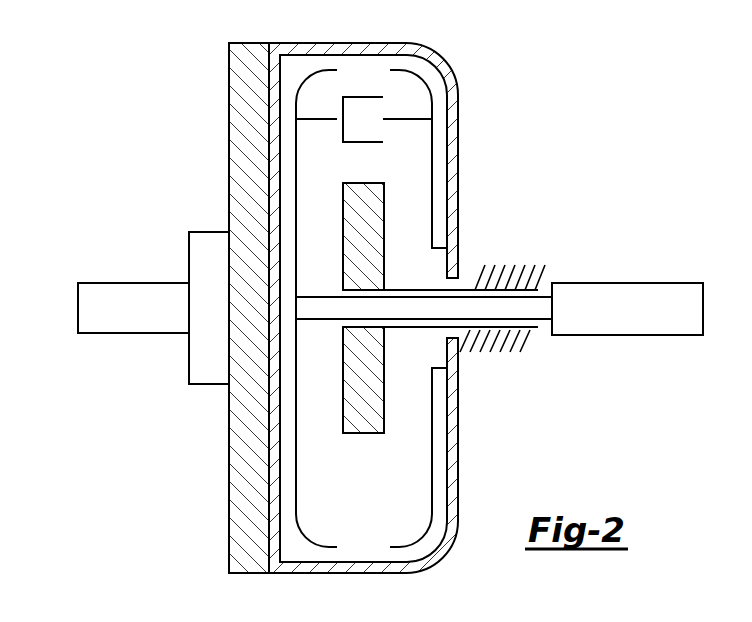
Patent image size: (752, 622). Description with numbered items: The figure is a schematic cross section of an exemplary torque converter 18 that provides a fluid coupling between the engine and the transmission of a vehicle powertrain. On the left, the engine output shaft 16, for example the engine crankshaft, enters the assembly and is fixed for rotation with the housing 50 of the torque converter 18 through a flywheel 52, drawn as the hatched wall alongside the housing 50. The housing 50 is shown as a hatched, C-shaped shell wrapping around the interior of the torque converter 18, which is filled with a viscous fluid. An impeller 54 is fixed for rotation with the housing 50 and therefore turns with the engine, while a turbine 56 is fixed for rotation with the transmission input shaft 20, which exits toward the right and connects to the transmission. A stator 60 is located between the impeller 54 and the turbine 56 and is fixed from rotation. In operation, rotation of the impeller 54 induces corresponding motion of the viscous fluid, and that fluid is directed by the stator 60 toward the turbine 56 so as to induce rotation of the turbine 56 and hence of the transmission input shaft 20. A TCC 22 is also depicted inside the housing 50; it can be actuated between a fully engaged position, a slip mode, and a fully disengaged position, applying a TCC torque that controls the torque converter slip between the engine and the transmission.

The engine output shaft 16 is at (78, 308).
The torque converter 18 is at (537, 367).
The transmission input shaft 20 is at (627, 283).
The TCC 22 is at (363, 97).
The housing 50 is at (383, 43).
The flywheel 52 is at (229, 107).
The impeller 54 is at (430, 203).
The turbine 56 is at (297, 502).
The stator 60 is at (366, 435).